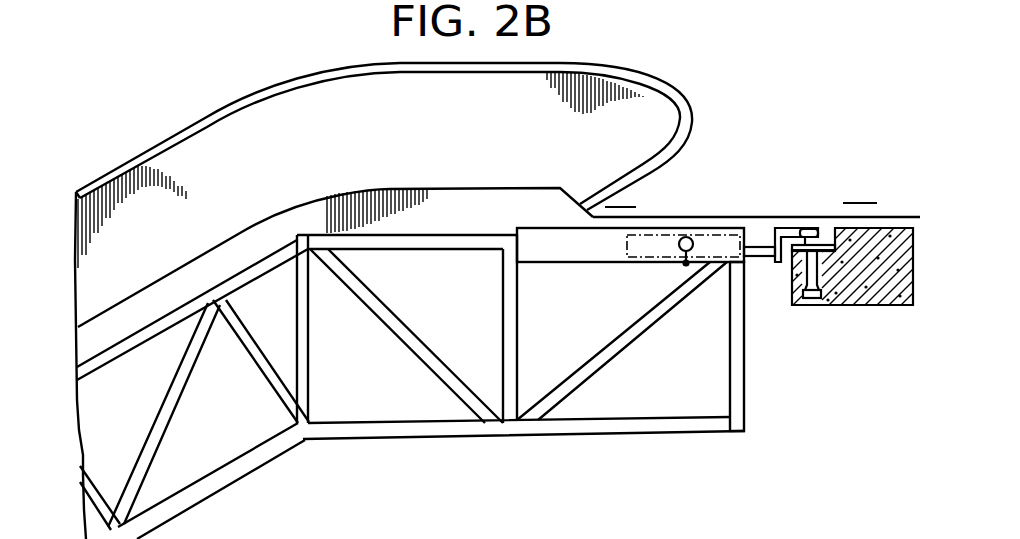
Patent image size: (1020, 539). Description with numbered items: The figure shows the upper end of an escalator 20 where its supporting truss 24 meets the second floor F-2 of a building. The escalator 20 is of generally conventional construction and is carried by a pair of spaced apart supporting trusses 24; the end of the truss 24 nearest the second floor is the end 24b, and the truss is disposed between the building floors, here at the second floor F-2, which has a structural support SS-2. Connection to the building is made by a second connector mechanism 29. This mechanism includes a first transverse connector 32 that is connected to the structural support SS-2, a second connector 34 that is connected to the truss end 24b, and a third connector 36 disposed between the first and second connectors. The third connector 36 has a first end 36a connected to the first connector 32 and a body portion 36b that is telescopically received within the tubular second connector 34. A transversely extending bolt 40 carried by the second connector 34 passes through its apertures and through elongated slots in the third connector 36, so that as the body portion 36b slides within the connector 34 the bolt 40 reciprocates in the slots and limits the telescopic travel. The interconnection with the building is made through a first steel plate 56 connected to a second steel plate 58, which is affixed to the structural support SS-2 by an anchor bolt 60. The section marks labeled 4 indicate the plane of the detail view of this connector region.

The escalator 20 is at (184, 90).
The supporting truss 24 is at (593, 444).
The second end of truss 24b is at (745, 387).
The second connector mechanism 29 is at (721, 188).
The second connector 34 is at (663, 211).
The third connector 36 is at (758, 226).
The first end of third connector 36a is at (767, 256).
The body portion of third connector 36b is at (660, 253).
The transversely extending bolt 40 is at (686, 263).
The first transverse connector 32 is at (802, 229).
The first steel plate 56 is at (815, 243).
The second steel plate 58 is at (828, 251).
The anchor bolt 60 is at (814, 298).
The second floor F-2 is at (900, 232).
The structural support SS-2 is at (833, 278).
The section line for FIG. 4 is at (620, 178).